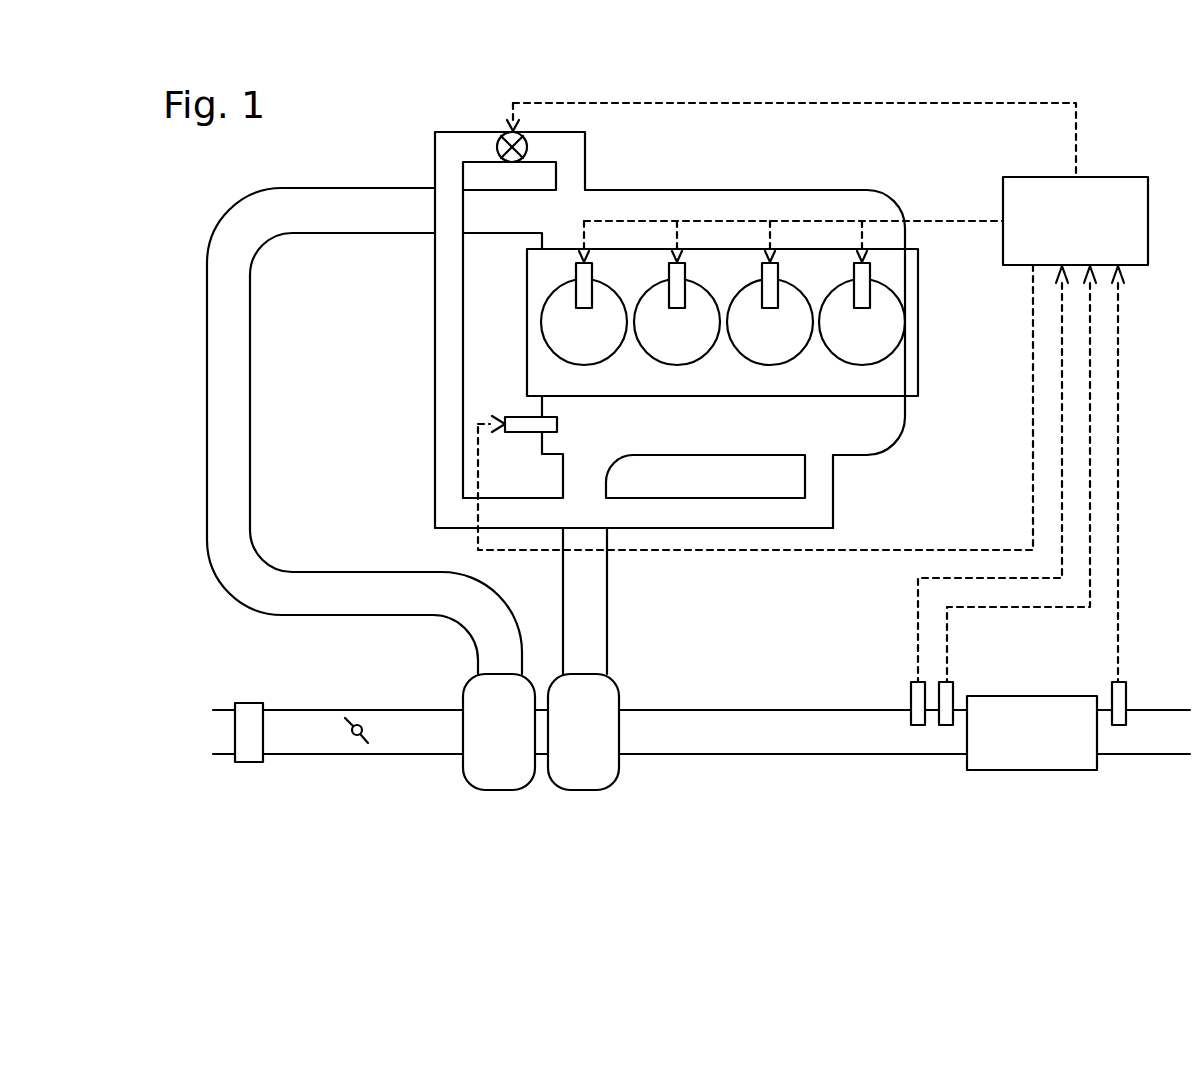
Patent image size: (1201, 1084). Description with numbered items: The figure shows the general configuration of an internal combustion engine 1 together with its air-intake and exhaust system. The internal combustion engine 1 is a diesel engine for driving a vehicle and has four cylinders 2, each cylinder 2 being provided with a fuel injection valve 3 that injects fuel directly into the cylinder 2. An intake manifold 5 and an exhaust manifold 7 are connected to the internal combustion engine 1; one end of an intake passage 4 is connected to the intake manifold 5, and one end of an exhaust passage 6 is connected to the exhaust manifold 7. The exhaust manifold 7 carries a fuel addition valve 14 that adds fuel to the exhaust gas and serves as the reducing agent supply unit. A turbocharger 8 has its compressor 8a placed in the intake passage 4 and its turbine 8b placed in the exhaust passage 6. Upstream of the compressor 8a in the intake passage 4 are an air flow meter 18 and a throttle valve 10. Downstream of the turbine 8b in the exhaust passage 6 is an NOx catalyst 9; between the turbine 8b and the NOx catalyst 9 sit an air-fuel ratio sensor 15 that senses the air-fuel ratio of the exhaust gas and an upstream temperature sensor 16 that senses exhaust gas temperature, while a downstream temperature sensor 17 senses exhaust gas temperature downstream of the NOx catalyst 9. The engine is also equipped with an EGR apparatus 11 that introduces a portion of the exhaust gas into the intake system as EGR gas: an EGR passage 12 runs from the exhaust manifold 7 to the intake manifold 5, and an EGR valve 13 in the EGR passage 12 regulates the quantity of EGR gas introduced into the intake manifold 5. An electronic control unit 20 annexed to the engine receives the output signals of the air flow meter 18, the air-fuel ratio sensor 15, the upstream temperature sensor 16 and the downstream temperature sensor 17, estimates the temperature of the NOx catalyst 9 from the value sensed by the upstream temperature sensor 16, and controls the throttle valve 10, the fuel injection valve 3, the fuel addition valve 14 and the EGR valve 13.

The internal combustion engine 1 is at (525, 322).
The cylinder 2 is at (574, 365).
The fuel injection valve 3 is at (593, 274).
The intake passage 4 is at (207, 394).
The intake manifold 5 is at (718, 188).
The exhaust passage 6 is at (607, 602).
The exhaust manifold 7 is at (722, 456).
The turbocharger 8 is at (541, 781).
The compressor 8a is at (497, 791).
The turbine 8b is at (583, 759).
The NOx catalyst 9 is at (1032, 771).
The throttle valve 10 is at (358, 722).
The EGR apparatus 11 is at (409, 456).
The EGR passage 12 is at (434, 353).
The EGR valve 13 is at (498, 142).
The fuel addition valve 14 is at (522, 416).
The air-fuel ratio sensor 15 is at (911, 700).
The upstream temperature sensor 16 is at (953, 700).
The downstream temperature sensor 17 is at (1126, 700).
The air flow meter 18 is at (253, 763).
The electronic control unit 20 is at (1122, 176).